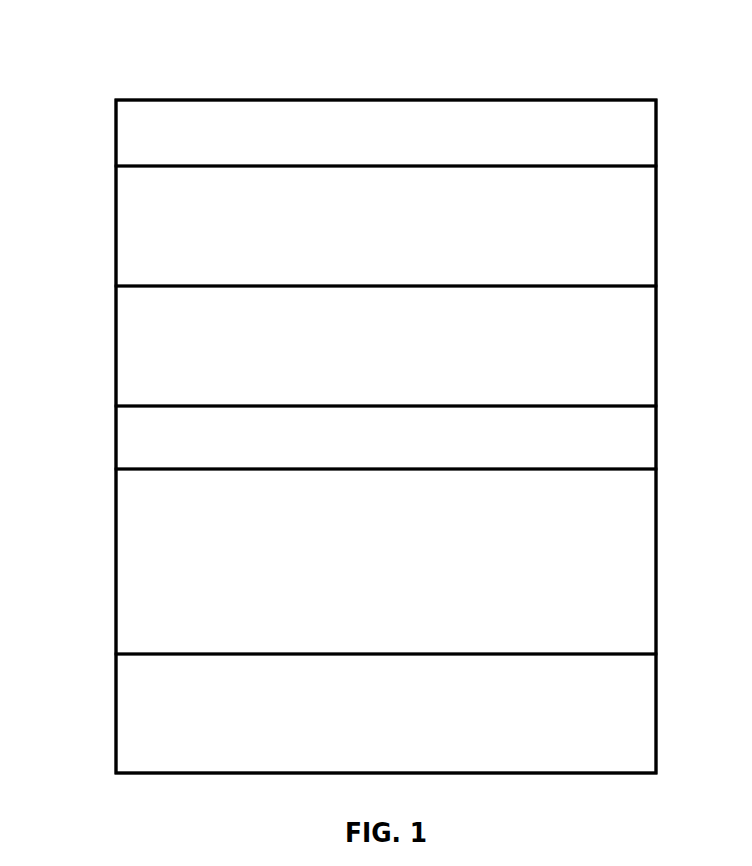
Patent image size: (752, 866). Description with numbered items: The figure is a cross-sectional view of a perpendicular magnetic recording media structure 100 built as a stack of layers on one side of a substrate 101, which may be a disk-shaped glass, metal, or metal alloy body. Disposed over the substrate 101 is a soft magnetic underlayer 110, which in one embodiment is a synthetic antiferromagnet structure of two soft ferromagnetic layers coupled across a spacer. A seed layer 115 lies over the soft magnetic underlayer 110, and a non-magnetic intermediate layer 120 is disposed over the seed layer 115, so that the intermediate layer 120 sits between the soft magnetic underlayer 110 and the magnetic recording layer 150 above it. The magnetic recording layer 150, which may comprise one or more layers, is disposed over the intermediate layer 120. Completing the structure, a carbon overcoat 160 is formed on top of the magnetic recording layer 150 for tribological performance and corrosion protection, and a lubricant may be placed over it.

The PMR media structure 100 is at (612, 54).
The substrate 101 is at (116, 716).
The soft magnetic underlayer 110 is at (116, 565).
The seed layer 115 is at (116, 440).
The intermediate layer 120 is at (116, 348).
The magnetic recording layer 150 is at (116, 228).
The carbon overcoat 160 is at (116, 135).